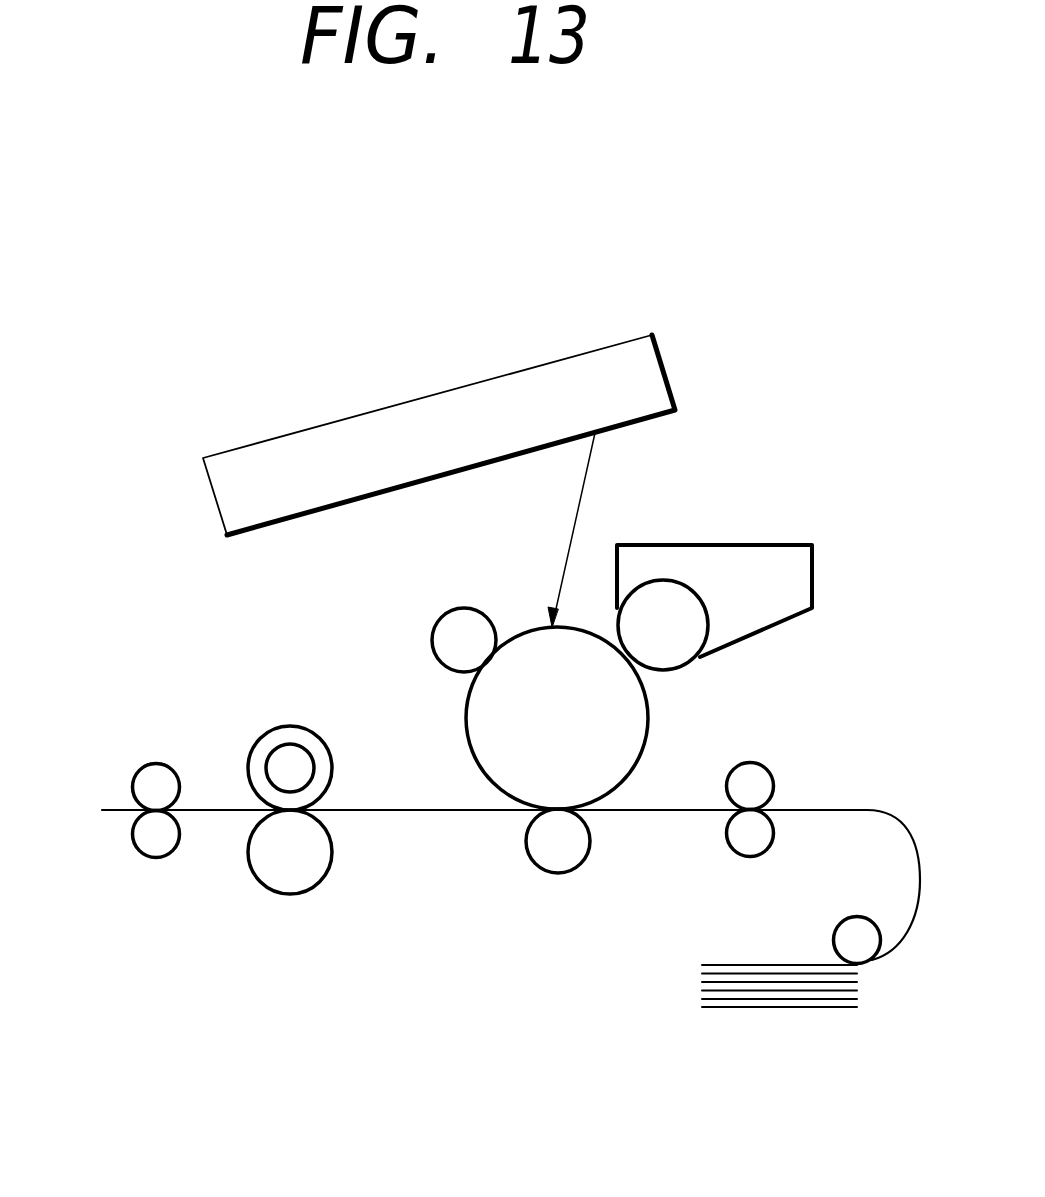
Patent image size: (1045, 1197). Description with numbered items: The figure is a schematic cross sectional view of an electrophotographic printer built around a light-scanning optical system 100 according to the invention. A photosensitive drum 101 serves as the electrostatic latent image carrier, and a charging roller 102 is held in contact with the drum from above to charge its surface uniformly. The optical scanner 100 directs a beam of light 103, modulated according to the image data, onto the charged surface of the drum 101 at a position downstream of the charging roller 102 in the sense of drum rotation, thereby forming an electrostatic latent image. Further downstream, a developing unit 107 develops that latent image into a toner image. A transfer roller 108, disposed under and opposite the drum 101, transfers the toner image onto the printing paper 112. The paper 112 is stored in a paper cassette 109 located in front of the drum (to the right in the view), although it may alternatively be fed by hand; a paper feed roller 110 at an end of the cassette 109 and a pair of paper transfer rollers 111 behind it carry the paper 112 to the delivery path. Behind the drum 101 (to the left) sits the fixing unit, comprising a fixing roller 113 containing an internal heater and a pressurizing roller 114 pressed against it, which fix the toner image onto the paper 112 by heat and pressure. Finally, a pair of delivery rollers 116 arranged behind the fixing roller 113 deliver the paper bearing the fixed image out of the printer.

The light-scanning optical system 100 is at (447, 400).
The photosensitive drum 101 is at (650, 745).
The charging roller 102 is at (443, 612).
The beam of light 103 is at (588, 465).
The developing unit 107 is at (747, 553).
The transfer roller 108 is at (582, 865).
The paper cassette 109 is at (772, 1010).
The paper feed roller 110 is at (843, 922).
The pair of paper transfer rollers 111 is at (768, 768).
The printing paper 112 is at (405, 808).
The fixing roller 113 is at (283, 730).
The pressurizing roller 114 is at (333, 867).
The pair of delivery rollers 116 is at (140, 772).